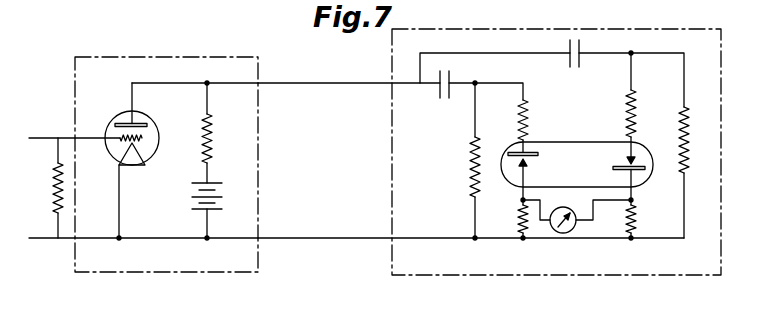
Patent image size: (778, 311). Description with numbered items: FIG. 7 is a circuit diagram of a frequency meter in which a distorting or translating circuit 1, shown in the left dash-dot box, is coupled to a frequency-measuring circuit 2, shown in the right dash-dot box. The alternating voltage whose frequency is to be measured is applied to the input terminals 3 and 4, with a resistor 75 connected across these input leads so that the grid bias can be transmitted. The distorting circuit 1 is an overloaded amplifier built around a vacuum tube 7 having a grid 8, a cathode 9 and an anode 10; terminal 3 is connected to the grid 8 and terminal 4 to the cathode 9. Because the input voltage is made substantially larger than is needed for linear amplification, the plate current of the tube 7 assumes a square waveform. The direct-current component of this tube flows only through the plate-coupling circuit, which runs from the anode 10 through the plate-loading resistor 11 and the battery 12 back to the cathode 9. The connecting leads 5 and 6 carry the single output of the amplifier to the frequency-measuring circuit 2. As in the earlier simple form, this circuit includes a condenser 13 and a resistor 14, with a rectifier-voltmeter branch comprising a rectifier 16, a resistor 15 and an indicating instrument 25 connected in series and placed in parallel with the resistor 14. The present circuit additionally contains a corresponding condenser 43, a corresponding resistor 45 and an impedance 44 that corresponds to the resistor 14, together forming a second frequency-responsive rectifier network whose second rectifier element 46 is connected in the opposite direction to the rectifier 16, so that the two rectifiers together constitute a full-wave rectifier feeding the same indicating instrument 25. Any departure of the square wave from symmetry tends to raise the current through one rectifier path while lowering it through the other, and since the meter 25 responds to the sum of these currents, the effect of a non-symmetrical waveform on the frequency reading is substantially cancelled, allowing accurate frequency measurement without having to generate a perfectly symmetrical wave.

The distorting or translating circuit 1 is at (169, 57).
The frequency-measuring circuit 2 is at (583, 30).
The input terminal 3 is at (40, 138).
The input terminal 4 is at (33, 238).
The connecting lead 5 is at (301, 83).
The connecting lead 6 is at (302, 238).
The vacuum tube 7 is at (131, 158).
The grid 8 is at (142, 138).
The cathode 9 is at (142, 160).
The anode 10 is at (147, 124).
The resistor 11 is at (213, 140).
The battery 12 is at (193, 200).
The condenser 13 is at (444, 101).
The resistor 14 is at (468, 173).
The resistor 15 is at (530, 126).
The rectifier 16 is at (520, 162).
The indicating instrument 25 is at (577, 227).
The condenser 43 is at (572, 68).
The impedance 44 is at (678, 143).
The resistor 45 is at (623, 116).
The second electrode of indicator tube 46 is at (626, 162).
The resistor 75 is at (50, 184).